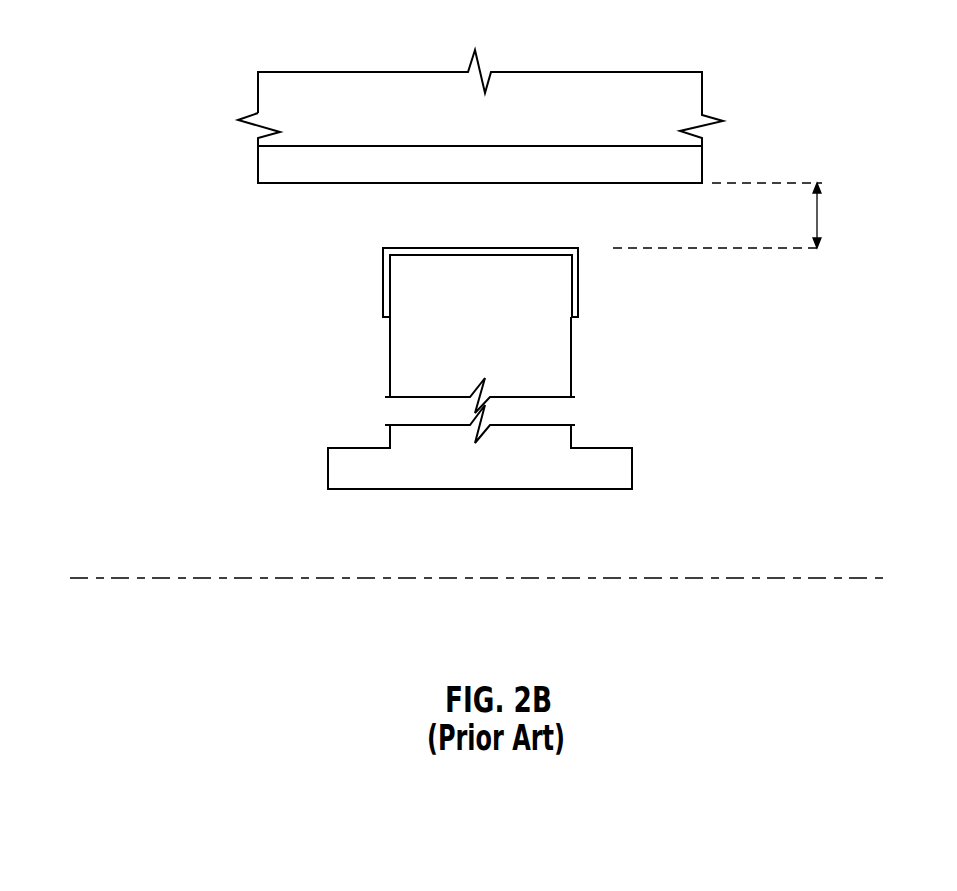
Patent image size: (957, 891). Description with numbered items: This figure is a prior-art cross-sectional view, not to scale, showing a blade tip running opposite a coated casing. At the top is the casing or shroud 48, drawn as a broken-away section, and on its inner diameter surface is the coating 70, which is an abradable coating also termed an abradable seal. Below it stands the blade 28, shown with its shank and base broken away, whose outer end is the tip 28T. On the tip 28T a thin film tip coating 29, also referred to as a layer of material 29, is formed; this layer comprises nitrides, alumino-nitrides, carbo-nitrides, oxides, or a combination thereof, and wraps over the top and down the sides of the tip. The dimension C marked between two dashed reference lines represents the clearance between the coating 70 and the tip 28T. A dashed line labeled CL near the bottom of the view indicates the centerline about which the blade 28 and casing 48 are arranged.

The casing or shroud 48 is at (270, 99).
The coating 70 is at (713, 165).
The thin film tip coating 29 is at (579, 280).
The tip 28T is at (418, 247).
The blade 28 is at (402, 340).
The clearance C is at (817, 215).
The centerline CL is at (100, 577).